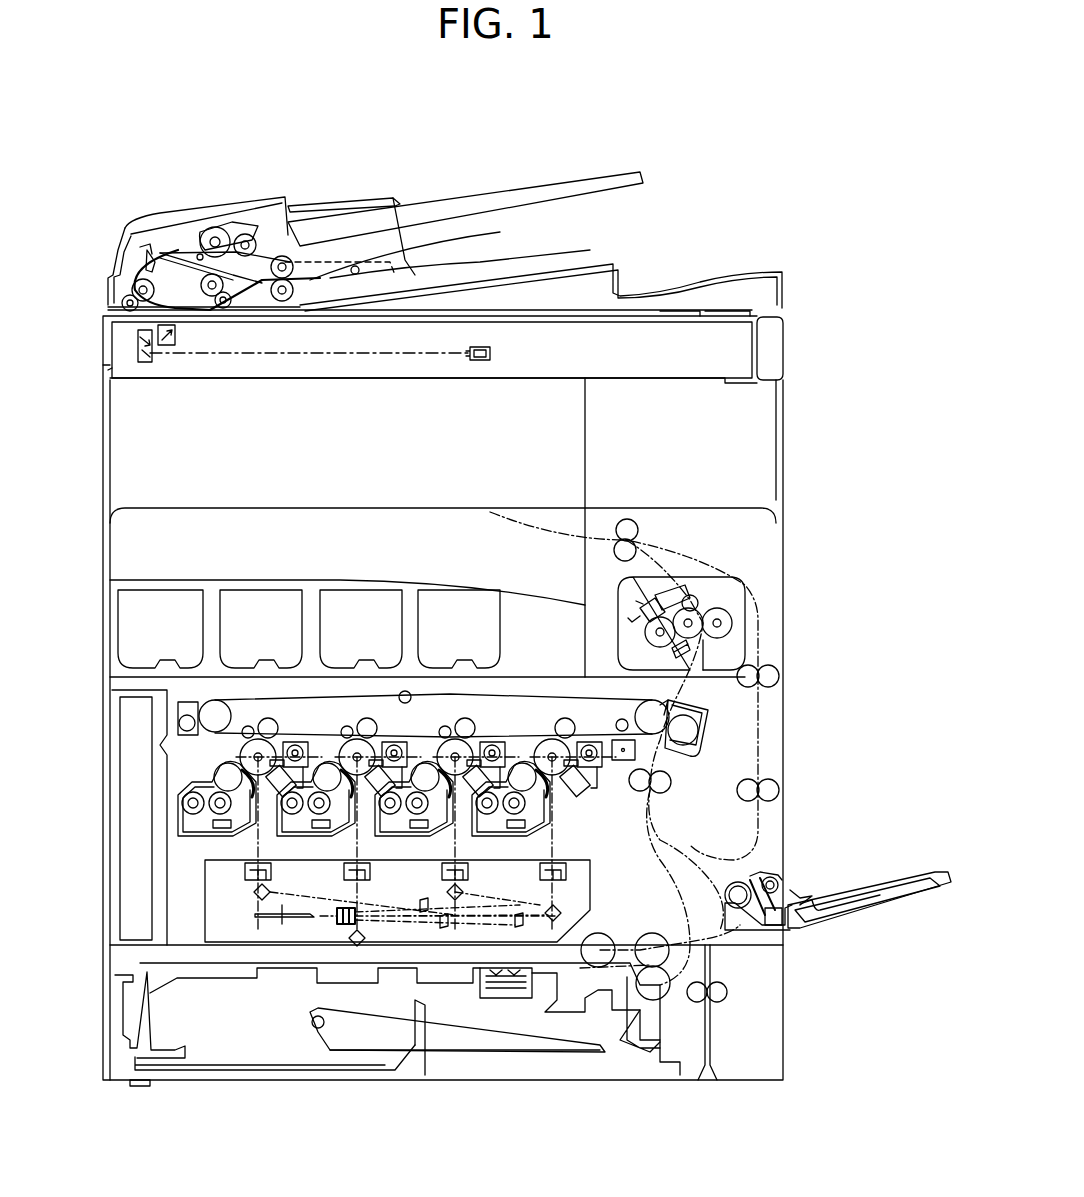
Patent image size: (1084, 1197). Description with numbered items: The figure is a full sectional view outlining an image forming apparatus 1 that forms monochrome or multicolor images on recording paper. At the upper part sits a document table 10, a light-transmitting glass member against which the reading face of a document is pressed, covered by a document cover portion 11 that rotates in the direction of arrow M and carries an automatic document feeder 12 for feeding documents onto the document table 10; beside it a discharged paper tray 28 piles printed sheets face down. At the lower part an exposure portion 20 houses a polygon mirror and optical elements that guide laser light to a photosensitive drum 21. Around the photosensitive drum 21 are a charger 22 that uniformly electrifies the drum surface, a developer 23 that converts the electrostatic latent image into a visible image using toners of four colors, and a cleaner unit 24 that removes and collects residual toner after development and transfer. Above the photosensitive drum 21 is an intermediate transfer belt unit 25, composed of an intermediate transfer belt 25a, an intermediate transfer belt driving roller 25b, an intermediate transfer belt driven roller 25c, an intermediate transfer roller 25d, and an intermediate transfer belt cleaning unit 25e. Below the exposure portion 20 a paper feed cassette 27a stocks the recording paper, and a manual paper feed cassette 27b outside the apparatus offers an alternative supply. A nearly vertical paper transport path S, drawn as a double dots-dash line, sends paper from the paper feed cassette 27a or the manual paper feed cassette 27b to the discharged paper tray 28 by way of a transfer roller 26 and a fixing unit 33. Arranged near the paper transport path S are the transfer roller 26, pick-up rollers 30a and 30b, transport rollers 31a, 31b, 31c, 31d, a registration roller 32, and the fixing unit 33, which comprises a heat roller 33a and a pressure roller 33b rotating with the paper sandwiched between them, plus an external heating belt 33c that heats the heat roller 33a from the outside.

The image forming apparatus 1 is at (790, 250).
The document table 10 is at (525, 313).
The document cover portion 11 is at (93, 215).
The automatic document feeder 12 is at (220, 198).
The arrow M is at (445, 150).
The exposure portion 20 is at (590, 886).
The photosensitive drum 21 is at (262, 740).
The charger 22 is at (270, 822).
The developer 23 is at (215, 778).
The cleaner unit 24 is at (298, 745).
The intermediate transfer belt unit 25 is at (533, 700).
The intermediate transfer belt 25a is at (565, 695).
The intermediate transfer belt driving roller 25b is at (662, 705).
The intermediate transfer belt driven roller 25c is at (222, 702).
The intermediate transfer roller 25d is at (278, 720).
The intermediate transfer belt cleaning unit 25e is at (190, 700).
The transfer roller 26 is at (690, 728).
The paper feed cassette 27a is at (380, 1022).
The manual paper feed cassette 27b is at (885, 870).
The discharged paper tray 28 is at (590, 265).
The pick-up roller 30a is at (600, 934).
The pick-up roller 30b is at (788, 892).
The transport roller 31a is at (748, 888).
The transport roller 31b is at (632, 520).
The transport roller 31c is at (775, 677).
The transport roller 31d is at (778, 790).
The registration roller 32 is at (665, 786).
The fixing unit 33 is at (745, 602).
The heat roller 33a is at (697, 612).
The pressure roller 33b is at (725, 628).
The external heating belt 33c is at (668, 595).
The paper transport path S is at (662, 850).